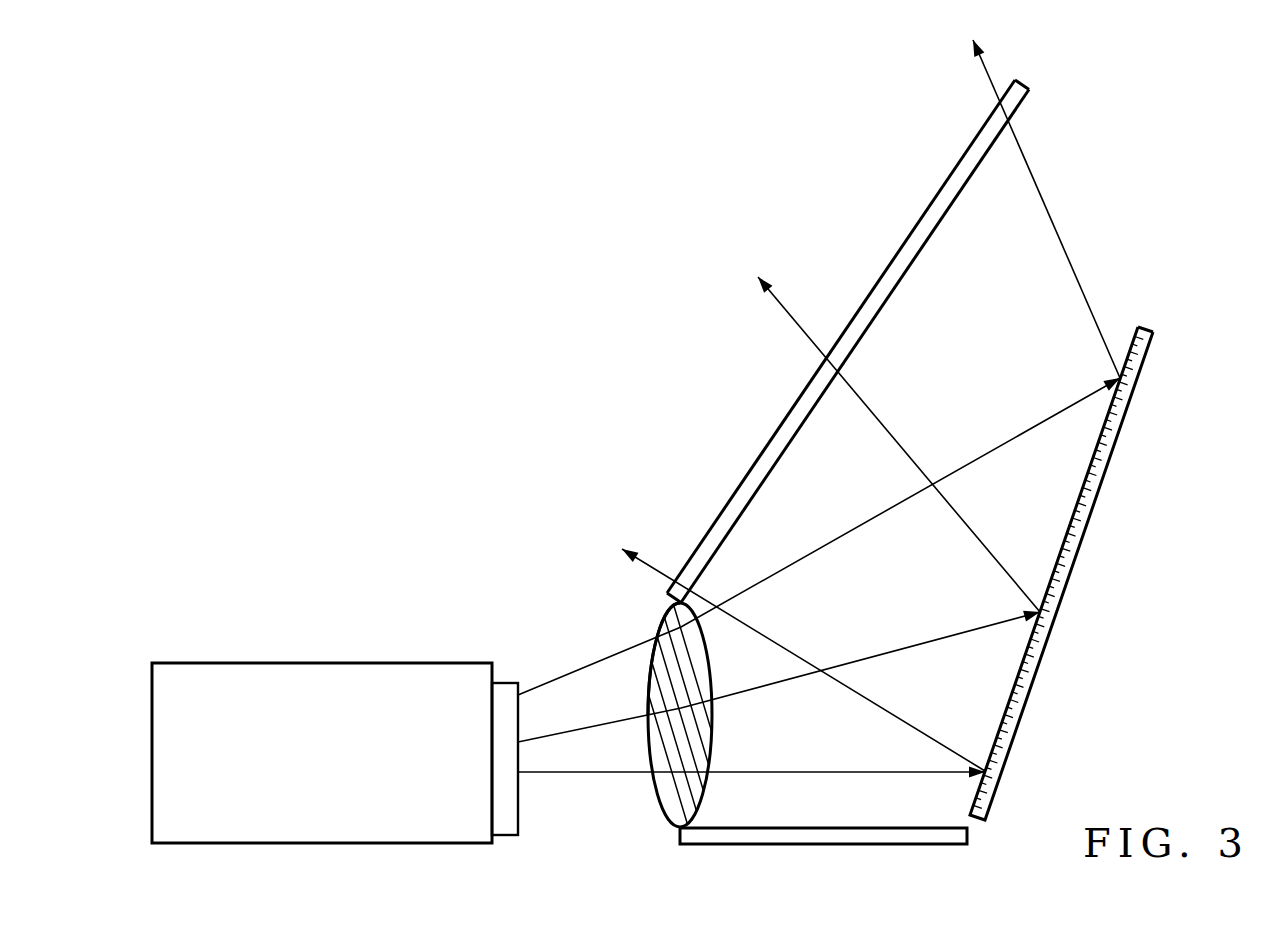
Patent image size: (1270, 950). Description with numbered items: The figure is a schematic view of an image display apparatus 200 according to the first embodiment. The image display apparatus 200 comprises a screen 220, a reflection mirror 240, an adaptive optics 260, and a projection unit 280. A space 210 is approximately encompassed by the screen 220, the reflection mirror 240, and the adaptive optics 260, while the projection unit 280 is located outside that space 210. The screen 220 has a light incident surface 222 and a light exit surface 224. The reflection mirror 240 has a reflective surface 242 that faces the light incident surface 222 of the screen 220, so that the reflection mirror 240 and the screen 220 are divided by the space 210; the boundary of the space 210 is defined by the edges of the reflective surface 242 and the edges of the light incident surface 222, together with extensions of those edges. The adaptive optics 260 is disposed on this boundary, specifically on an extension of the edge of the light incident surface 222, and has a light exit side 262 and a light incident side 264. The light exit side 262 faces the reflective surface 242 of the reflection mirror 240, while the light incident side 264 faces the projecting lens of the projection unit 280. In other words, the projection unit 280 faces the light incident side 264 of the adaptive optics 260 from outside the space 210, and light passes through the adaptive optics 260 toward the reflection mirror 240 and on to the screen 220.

The image display apparatus 200 is at (374, 237).
The space 210 is at (1093, 232).
The screen 220 is at (913, 332).
The light incident surface 222 is at (888, 302).
The light exit surface 224 is at (955, 165).
The reflection mirror 240 is at (1097, 552).
The reflective surface 242 is at (1128, 327).
The adaptive optics 260 is at (599, 726).
The light exit side 262 is at (700, 800).
The light incident side 264 is at (665, 615).
The projection unit 280 is at (384, 678).